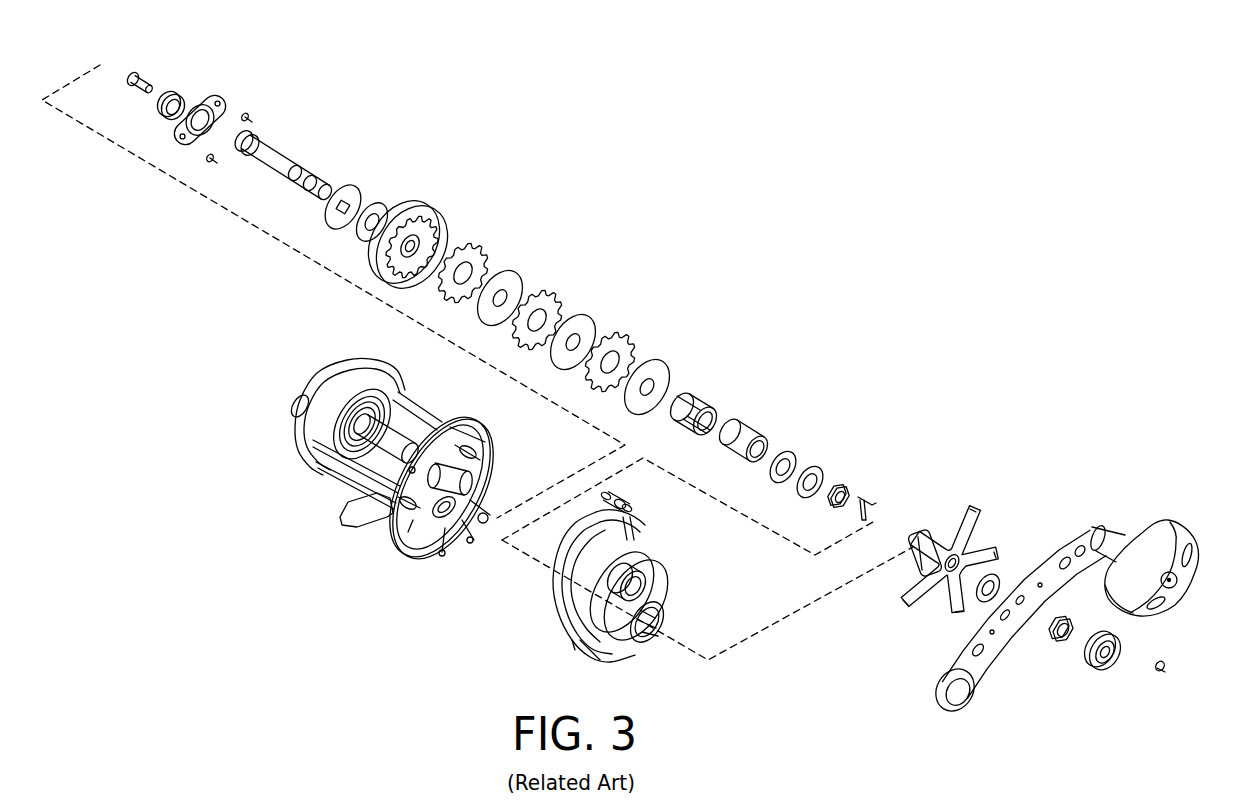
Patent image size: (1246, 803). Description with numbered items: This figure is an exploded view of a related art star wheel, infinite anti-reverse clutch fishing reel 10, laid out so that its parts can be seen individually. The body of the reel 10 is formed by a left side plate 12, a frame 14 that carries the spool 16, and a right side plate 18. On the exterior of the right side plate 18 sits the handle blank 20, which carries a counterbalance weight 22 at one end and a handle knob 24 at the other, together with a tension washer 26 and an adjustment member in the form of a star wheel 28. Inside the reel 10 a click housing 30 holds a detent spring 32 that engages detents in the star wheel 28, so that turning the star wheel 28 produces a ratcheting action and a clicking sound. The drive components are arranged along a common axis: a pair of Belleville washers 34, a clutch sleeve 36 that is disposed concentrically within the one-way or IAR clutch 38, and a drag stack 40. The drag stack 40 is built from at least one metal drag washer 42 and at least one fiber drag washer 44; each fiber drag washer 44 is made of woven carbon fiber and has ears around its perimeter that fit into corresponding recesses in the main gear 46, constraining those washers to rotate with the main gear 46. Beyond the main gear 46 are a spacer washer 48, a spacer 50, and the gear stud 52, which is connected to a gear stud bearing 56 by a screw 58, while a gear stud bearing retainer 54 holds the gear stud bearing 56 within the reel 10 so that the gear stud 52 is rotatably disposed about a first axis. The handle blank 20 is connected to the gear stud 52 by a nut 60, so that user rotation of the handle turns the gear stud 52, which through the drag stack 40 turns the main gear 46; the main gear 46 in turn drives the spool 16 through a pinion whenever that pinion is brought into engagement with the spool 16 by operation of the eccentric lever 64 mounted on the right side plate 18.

The fishing reel 10 is at (520, 122).
The left side plate 12 is at (391, 458).
The frame 14 is at (318, 480).
The spool 16 is at (405, 402).
The right side plate 18 is at (620, 587).
The handle blank 20 is at (993, 639).
The counterbalance weight 22 is at (938, 712).
The handle knob 24 is at (1180, 515).
The tension washer 26 is at (998, 567).
The star wheel 28 is at (978, 508).
The click housing 30 is at (847, 480).
The detent spring 32 is at (870, 497).
The Belleville washers 34 is at (822, 468).
The clutch sleeve 36 is at (750, 423).
The IAR clutch 38 is at (702, 393).
The drag stack 40 is at (727, 323).
The metal drag washer 42 is at (515, 278).
The fiber drag washer 44 is at (477, 250).
The main gear 46 is at (445, 215).
The spacer washer 48 is at (382, 195).
The spacer 50 is at (353, 183).
The gear stud 52 is at (283, 153).
The gear stud bearing retainer 54 is at (230, 95).
The gear stud bearing 56 is at (177, 98).
The screw 58 is at (140, 78).
The nut 60 is at (1057, 637).
The eccentric lever 64 is at (640, 508).